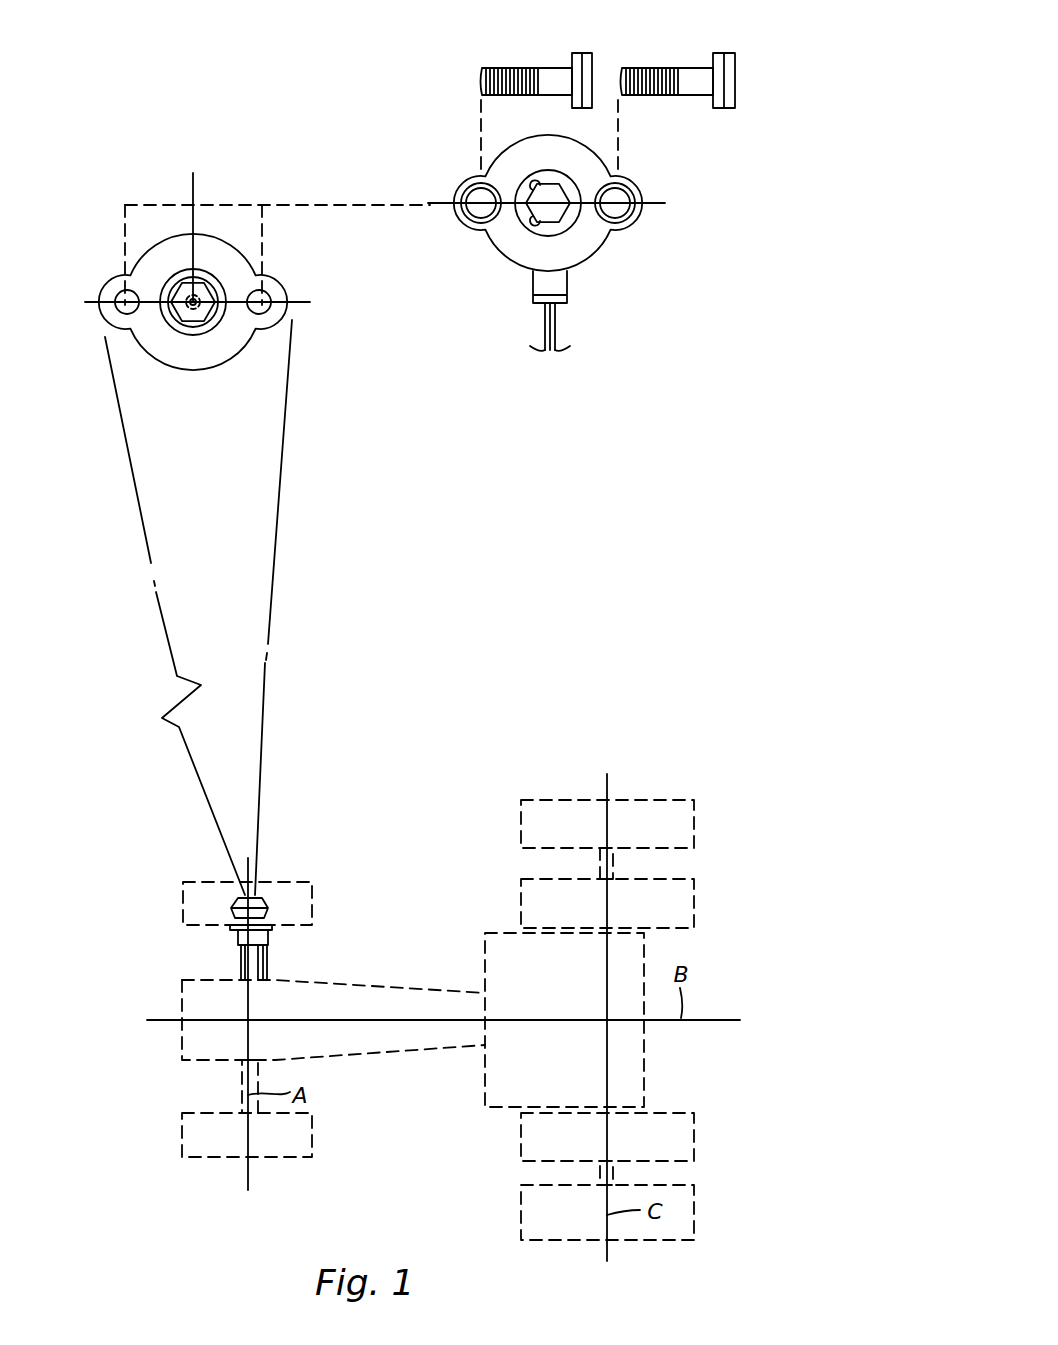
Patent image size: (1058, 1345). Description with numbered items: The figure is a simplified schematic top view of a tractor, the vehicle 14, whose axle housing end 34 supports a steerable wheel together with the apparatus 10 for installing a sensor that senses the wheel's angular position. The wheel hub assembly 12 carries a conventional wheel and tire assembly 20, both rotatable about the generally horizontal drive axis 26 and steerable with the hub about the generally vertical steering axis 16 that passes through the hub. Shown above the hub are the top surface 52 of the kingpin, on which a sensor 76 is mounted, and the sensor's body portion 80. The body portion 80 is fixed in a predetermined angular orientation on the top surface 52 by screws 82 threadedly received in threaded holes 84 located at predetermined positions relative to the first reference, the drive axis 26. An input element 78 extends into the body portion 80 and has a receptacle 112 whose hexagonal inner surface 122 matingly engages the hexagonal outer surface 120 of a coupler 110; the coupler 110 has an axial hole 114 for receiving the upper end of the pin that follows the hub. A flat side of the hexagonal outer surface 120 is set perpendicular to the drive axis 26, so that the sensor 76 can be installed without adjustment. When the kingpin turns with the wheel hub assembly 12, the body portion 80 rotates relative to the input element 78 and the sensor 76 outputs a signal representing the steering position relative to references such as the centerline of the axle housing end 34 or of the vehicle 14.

The apparatus 10 is at (235, 925).
The wheel hub assembly 12 is at (259, 897).
The vehicle 14 is at (693, 785).
The steering axis 16 is at (198, 295).
The wheel and tire assembly 20 is at (312, 900).
The drive axis 26 is at (192, 187).
The axle housing end 34 is at (235, 940).
The top surface 52 is at (230, 338).
The sensor 76 is at (580, 273).
The input element 78 is at (533, 240).
The body portion 80 is at (604, 250).
The screws 82 is at (515, 68).
The threaded holes 84 is at (127, 309).
The coupler 110 is at (177, 283).
The receptacle 112 is at (535, 186).
The axial hole 114 is at (196, 299).
The hexagonal outer surface 120 is at (185, 322).
The hexagonal inner surface 122 is at (537, 221).